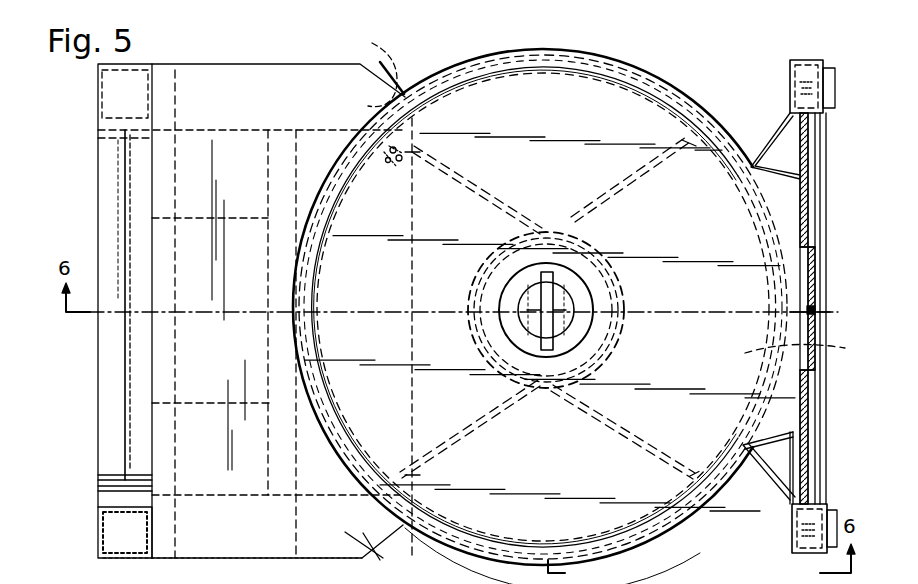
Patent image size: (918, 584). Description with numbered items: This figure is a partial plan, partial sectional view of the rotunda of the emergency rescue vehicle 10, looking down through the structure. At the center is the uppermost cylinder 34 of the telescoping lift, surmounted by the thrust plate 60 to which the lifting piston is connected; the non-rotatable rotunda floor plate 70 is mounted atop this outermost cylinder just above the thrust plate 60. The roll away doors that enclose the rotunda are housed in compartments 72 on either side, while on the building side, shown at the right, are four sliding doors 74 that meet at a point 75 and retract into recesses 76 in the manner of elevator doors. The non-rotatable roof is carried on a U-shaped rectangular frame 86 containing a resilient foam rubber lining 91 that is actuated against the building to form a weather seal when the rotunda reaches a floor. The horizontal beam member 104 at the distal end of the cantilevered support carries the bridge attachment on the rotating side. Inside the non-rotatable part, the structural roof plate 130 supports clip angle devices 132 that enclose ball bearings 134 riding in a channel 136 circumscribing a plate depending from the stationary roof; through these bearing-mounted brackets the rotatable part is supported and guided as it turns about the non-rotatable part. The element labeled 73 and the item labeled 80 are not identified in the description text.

The emergency rescue vehicle 10 is at (638, 55).
The uppermost cylinder 34 is at (592, 245).
The thrust plate 60 is at (580, 298).
The rotunda floor plate 70 is at (838, 350).
The compartments 72 is at (372, 44).
The lower rim 73 is at (662, 530).
The sliding doors 74 is at (810, 246).
The meeting point 75 is at (815, 310).
The recesses 76 is at (808, 155).
The housing 80 is at (228, 61).
The rectangular frame 86 is at (790, 62).
The foam rubber lining 91 is at (830, 68).
The horizontal beam member 104 is at (112, 386).
The structural roof plate 130 is at (424, 217).
The clip angle devices 132 is at (423, 163).
The ball bearings 134 is at (388, 165).
The channel 136 is at (628, 82).